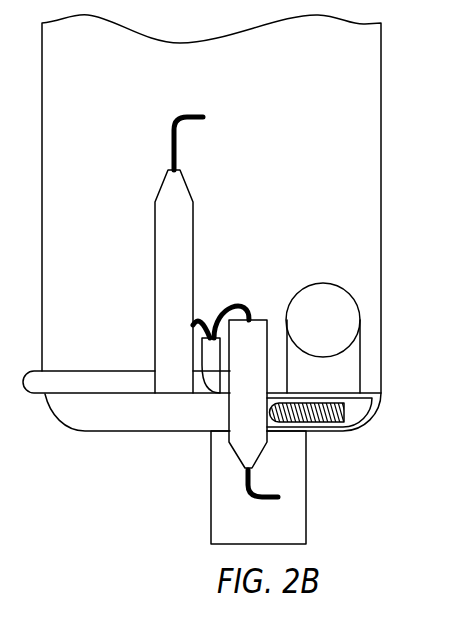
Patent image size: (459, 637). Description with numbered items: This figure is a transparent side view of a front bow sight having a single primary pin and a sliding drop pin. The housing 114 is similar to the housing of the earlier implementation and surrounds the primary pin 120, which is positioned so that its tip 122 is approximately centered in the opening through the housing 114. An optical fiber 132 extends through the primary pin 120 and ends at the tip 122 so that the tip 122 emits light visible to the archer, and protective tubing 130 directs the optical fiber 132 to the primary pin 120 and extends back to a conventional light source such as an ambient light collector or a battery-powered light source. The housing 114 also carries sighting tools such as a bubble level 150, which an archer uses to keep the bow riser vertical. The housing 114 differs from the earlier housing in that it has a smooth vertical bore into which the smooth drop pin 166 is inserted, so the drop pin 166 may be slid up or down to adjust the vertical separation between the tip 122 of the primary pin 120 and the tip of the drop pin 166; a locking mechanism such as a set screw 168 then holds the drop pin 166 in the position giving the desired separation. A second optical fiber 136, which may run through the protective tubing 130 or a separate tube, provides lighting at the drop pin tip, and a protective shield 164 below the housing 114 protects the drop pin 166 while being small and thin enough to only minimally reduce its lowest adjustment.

The housing 114 is at (382, 207).
The primary pin 120 is at (155, 282).
The tip 122 is at (218, 109).
The protective tubing 130 is at (138, 371).
The optical fiber 132 is at (202, 318).
The optical fiber 136 is at (238, 300).
The bubble level 150 is at (342, 386).
The protective shield 164 is at (211, 527).
The drop pin 166 is at (263, 320).
The set screw 168 is at (329, 422).